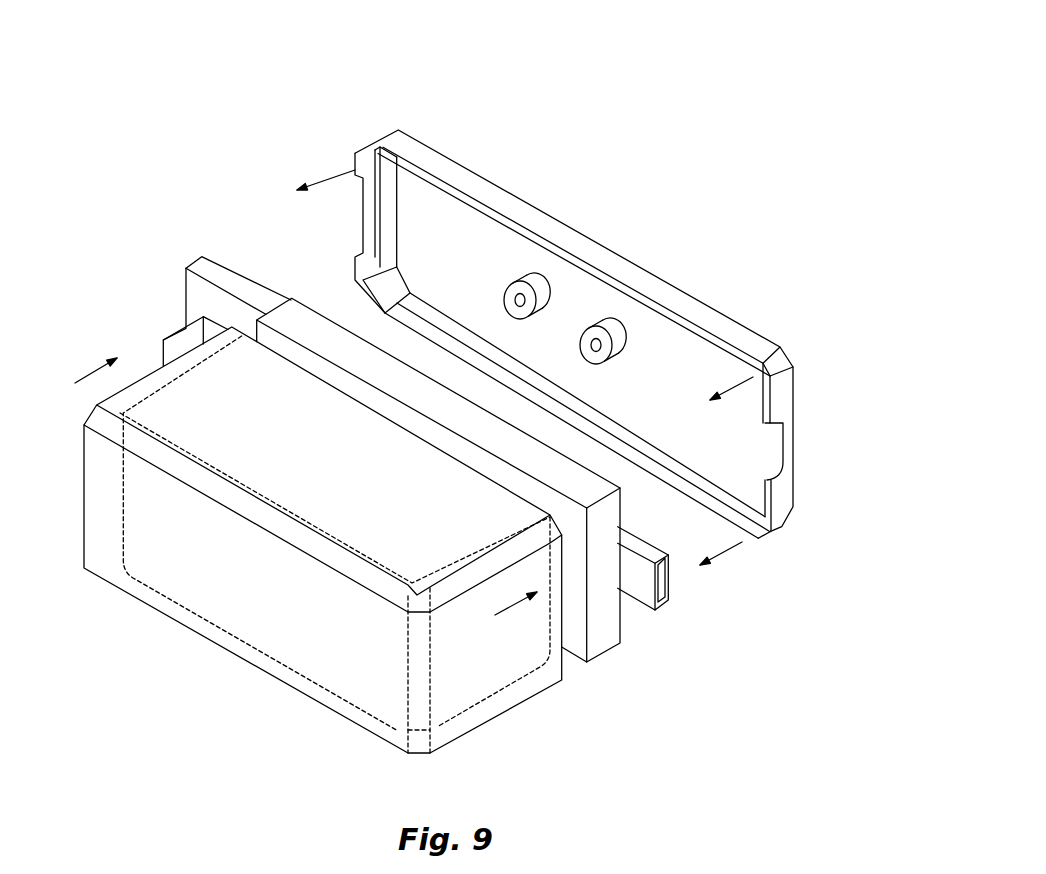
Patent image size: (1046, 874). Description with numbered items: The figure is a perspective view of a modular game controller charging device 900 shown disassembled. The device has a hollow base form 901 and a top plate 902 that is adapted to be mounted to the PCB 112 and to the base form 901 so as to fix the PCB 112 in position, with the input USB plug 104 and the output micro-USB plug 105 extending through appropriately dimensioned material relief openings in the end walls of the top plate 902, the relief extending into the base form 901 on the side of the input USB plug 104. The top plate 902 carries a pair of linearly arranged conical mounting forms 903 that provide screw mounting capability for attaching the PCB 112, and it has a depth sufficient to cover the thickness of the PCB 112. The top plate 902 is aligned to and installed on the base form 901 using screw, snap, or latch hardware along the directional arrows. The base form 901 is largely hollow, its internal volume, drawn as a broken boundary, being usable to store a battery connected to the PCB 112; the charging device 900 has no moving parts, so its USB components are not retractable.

The modular game controller charging device 900 is at (605, 118).
The hollow base form 901 is at (255, 665).
The top plate 902 is at (663, 277).
The conical mounting forms 903 is at (500, 286).
The input USB plug 104 is at (185, 305).
The output micro-USB plug 105 is at (670, 577).
The PCB 112 is at (297, 280).